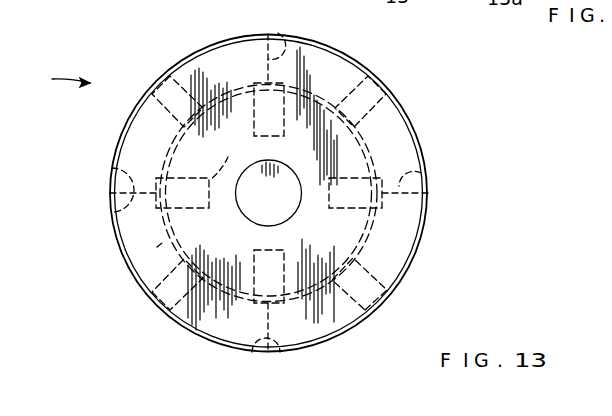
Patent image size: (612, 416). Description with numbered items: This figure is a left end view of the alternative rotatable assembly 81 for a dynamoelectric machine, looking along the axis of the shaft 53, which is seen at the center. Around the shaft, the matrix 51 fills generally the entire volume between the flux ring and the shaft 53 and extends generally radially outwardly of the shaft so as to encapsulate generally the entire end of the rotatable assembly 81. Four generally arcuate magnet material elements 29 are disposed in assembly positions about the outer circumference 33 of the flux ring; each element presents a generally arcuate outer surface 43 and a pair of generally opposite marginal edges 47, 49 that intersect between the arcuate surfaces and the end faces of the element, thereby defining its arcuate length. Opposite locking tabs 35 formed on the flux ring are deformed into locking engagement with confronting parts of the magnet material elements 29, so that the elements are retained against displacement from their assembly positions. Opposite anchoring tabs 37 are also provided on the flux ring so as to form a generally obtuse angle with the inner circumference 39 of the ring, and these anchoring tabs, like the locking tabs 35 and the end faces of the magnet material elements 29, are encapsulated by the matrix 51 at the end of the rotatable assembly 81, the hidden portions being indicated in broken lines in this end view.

The magnet material element 29 is at (96, 1).
The outer circumference 33 is at (157, 247).
The locking tab 35 is at (148, 97).
The anchoring tab 37 is at (255, 135).
The inner circumference 39 is at (176, 236).
The arcuate outer surface 43 is at (125, 122).
The marginal edge 47 is at (265, 33).
The marginal edge 49 is at (284, 34).
The matrix 51 is at (388, 146).
The shaft 53 is at (282, 205).
The rotatable assembly 81 is at (47, 91).